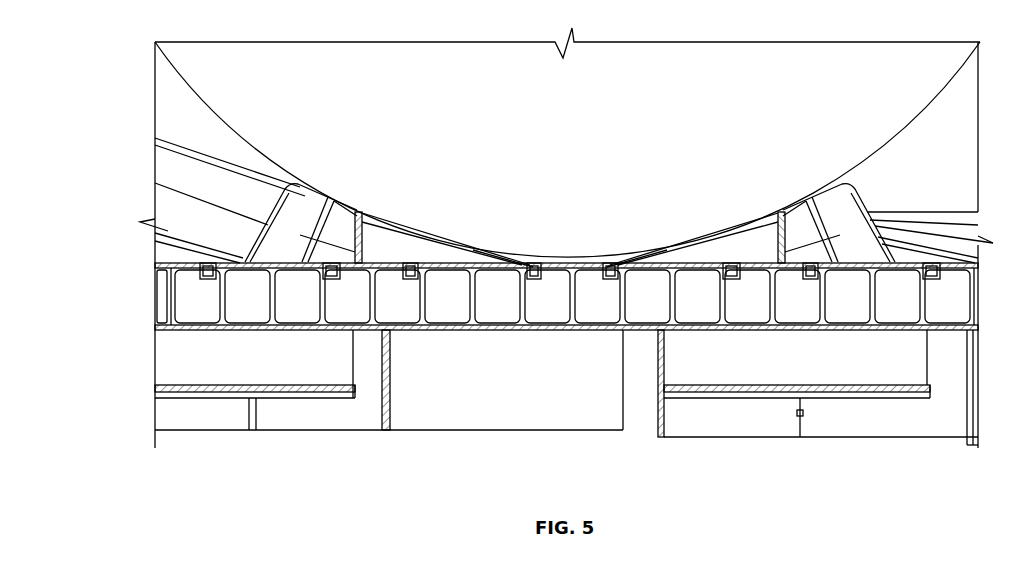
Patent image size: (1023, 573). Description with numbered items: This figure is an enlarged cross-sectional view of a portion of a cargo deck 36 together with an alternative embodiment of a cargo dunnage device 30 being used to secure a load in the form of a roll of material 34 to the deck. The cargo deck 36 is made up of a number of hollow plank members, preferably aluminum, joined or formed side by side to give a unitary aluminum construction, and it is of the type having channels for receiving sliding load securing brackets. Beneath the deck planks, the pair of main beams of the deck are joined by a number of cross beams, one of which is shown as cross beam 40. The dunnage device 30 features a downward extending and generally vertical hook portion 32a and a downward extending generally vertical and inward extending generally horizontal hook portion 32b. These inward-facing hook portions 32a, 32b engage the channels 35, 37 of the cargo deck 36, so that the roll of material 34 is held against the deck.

The cargo dunnage device 30 is at (162, 164).
The hook portion 32a is at (213, 280).
The hook portion 32b is at (332, 262).
The roll of material 34 is at (566, 170).
The channel 35 is at (178, 283).
The cargo deck 36 is at (542, 328).
The channel 37 is at (358, 298).
The cross beam 40 is at (760, 387).